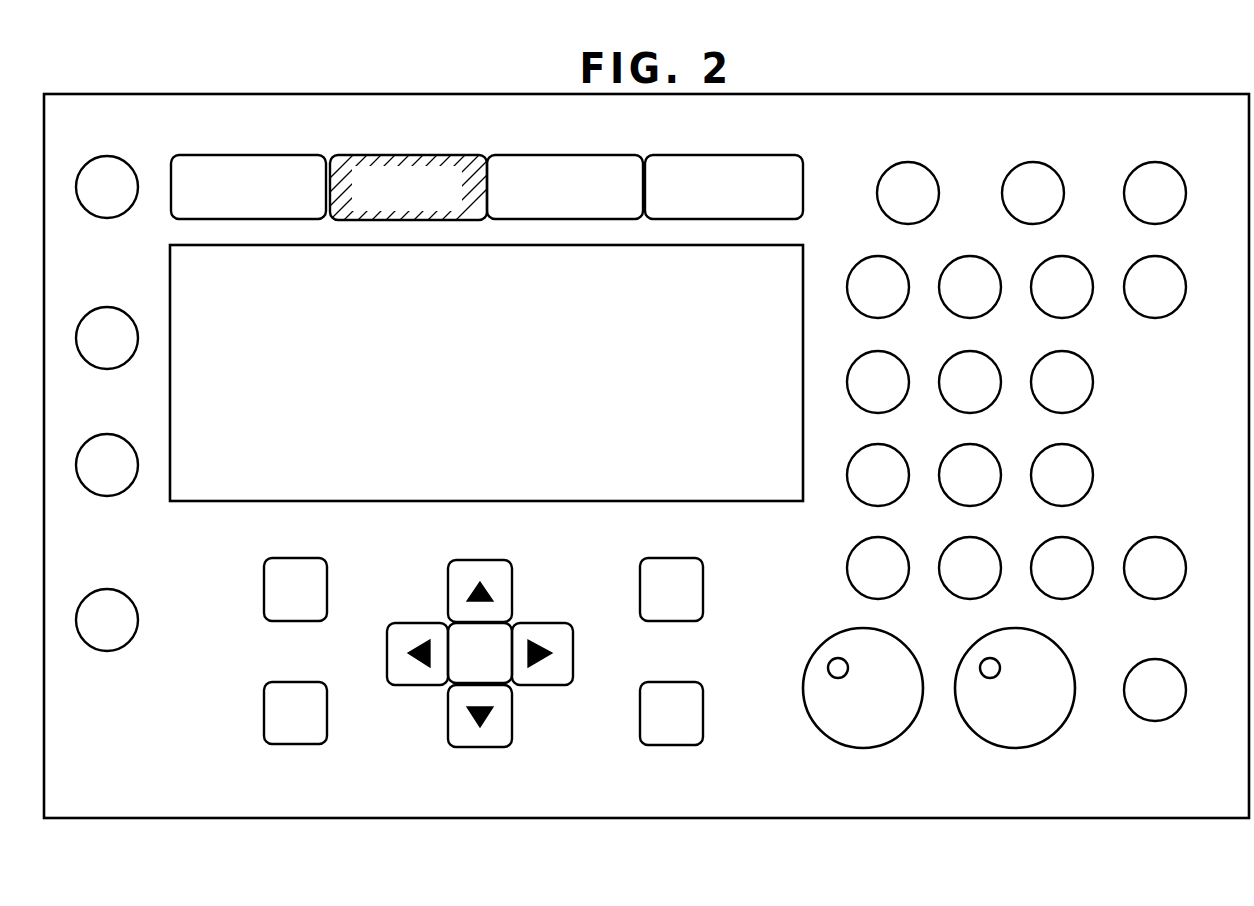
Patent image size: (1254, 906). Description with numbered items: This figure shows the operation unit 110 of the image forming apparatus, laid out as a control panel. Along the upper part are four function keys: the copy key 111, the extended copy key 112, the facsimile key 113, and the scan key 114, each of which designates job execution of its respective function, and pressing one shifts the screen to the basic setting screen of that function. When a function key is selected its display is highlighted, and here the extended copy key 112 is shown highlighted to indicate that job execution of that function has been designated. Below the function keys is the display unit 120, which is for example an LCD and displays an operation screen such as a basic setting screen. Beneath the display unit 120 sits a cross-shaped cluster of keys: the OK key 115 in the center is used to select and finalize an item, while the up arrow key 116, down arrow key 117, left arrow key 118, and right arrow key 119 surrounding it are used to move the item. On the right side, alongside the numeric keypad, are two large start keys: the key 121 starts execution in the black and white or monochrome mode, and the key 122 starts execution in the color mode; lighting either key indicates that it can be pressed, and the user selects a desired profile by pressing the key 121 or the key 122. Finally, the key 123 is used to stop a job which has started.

The operation unit 110 is at (1220, 94).
The copy function key 111 is at (278, 153).
The extended copy function key 112 is at (438, 154).
The facsimile function key 113 is at (592, 154).
The scan function key 114 is at (750, 154).
The OK key 115 is at (505, 632).
The up arrow key 116 is at (480, 559).
The down arrow key 117 is at (481, 748).
The left arrow key 118 is at (410, 622).
The right arrow key 119 is at (573, 652).
The display unit 120 is at (778, 501).
The monochrome start key 121 is at (902, 733).
The color start key 122 is at (1060, 732).
The stop key 123 is at (1183, 672).